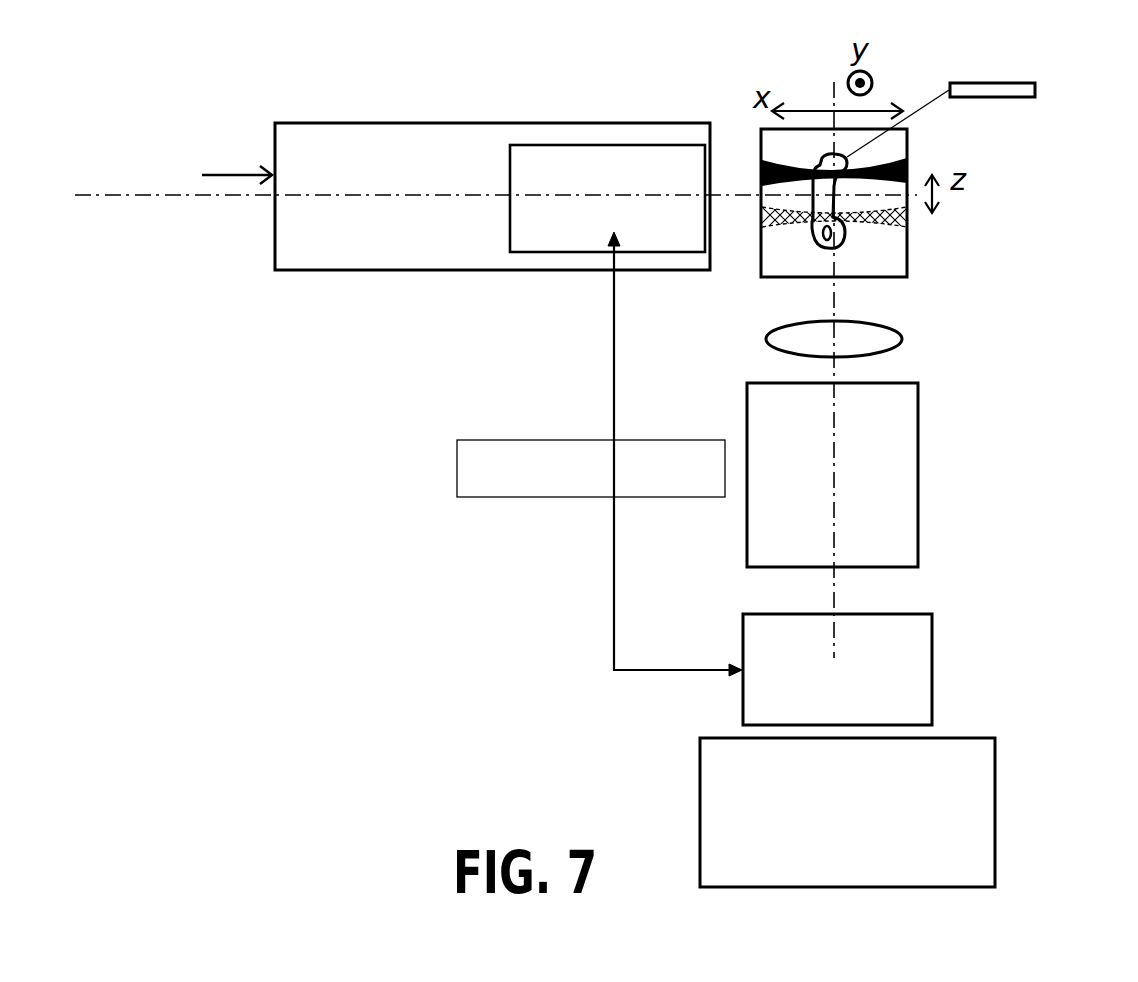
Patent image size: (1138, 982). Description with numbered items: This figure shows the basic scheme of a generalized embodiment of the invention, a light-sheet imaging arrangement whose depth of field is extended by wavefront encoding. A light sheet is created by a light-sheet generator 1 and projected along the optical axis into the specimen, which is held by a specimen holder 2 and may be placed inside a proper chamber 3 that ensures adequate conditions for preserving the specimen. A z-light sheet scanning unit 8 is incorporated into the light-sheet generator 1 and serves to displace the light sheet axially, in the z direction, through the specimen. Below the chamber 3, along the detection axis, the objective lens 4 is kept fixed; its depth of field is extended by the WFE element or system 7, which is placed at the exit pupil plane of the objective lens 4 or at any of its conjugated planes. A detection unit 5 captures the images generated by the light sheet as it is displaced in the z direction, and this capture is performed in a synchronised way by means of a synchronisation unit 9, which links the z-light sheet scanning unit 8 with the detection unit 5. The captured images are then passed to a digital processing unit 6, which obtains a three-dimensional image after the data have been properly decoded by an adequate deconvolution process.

The light-sheet generator 1 is at (338, 252).
The specimen holder 2 is at (1018, 88).
The chamber 3 is at (882, 251).
The objective lens 4 is at (882, 338).
The detection unit 5 is at (923, 652).
The digital processing unit 6 is at (988, 763).
The WFE element or system 7 is at (900, 490).
The z-light sheet scanning unit 8 is at (577, 229).
The synchronisation unit 9 is at (477, 468).